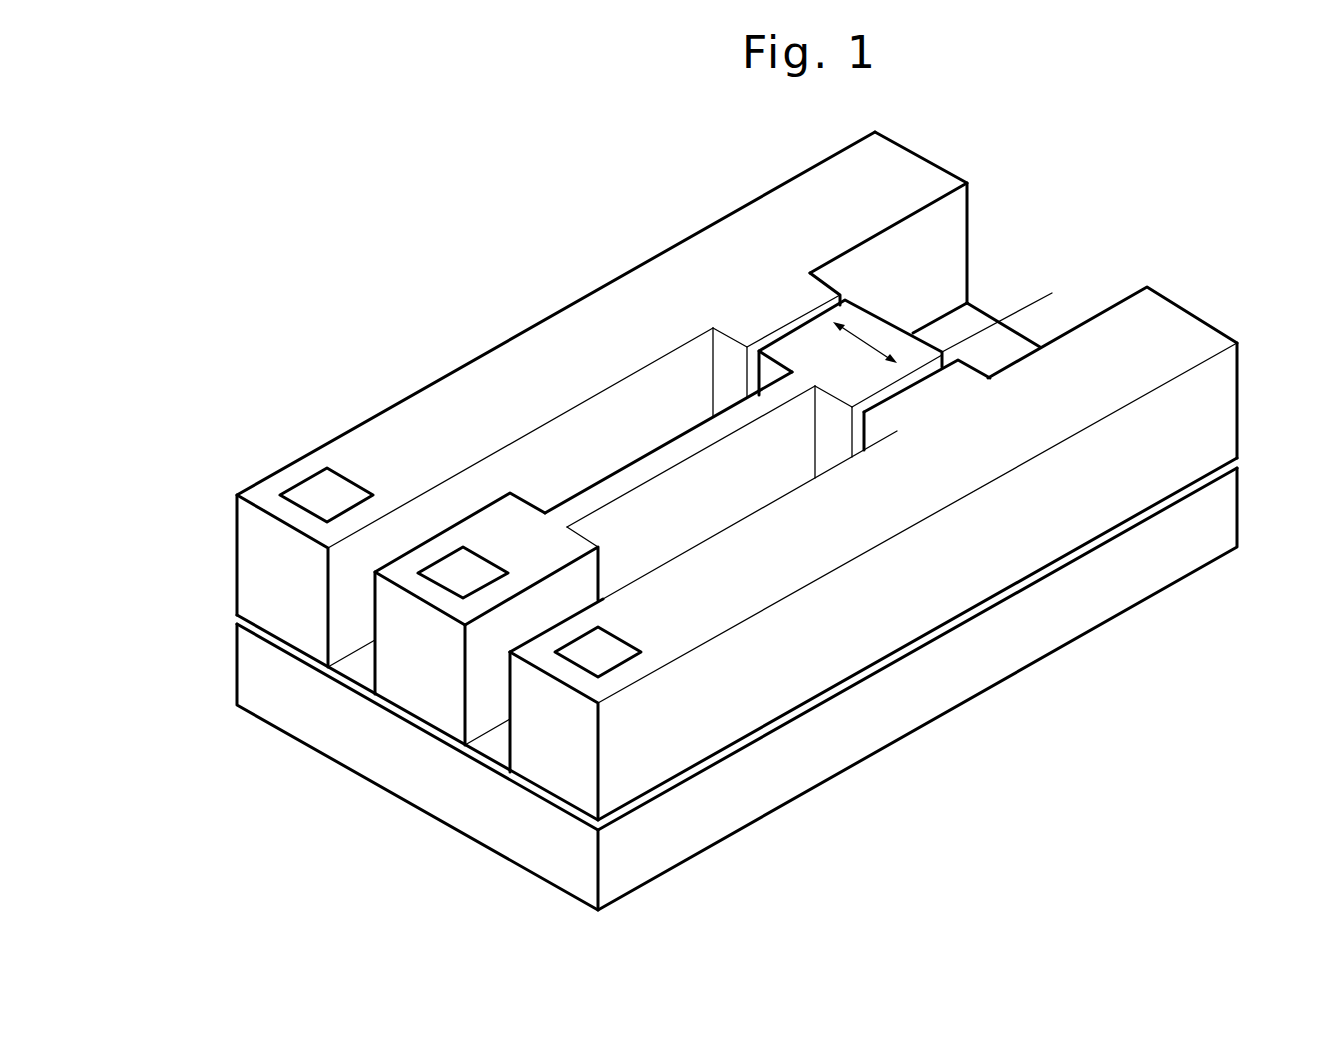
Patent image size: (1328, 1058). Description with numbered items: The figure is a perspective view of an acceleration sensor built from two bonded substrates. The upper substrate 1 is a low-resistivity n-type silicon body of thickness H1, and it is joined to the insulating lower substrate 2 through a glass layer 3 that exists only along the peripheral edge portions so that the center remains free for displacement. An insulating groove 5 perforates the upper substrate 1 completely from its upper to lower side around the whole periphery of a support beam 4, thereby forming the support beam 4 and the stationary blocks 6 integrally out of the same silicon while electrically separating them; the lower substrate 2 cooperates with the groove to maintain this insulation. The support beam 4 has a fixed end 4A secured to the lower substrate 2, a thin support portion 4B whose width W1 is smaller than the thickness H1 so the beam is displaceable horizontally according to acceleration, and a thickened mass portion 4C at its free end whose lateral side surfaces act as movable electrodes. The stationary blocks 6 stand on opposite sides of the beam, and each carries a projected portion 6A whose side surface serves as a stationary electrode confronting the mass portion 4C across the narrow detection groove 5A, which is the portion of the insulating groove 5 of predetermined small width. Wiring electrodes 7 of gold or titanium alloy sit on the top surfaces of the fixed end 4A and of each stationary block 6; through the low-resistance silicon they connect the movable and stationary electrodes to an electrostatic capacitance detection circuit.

The upper substrate 1 is at (519, 327).
The lower substrate 2 is at (868, 740).
The glass layer 3 is at (1242, 463).
The support beam 4 is at (734, 528).
The fixed end 4A is at (433, 672).
The thin support portion 4B is at (640, 462).
The mass portion 4C is at (903, 332).
The insulating groove 5 is at (984, 423).
The detection groove 5A is at (885, 330).
The stationary block 6 is at (758, 213).
The projected portion 6A is at (767, 323).
The wiring electrode 7 is at (318, 490).
The thickness of the upper substrate H1 is at (180, 495).
The width of the thin support portion W1 is at (627, 495).